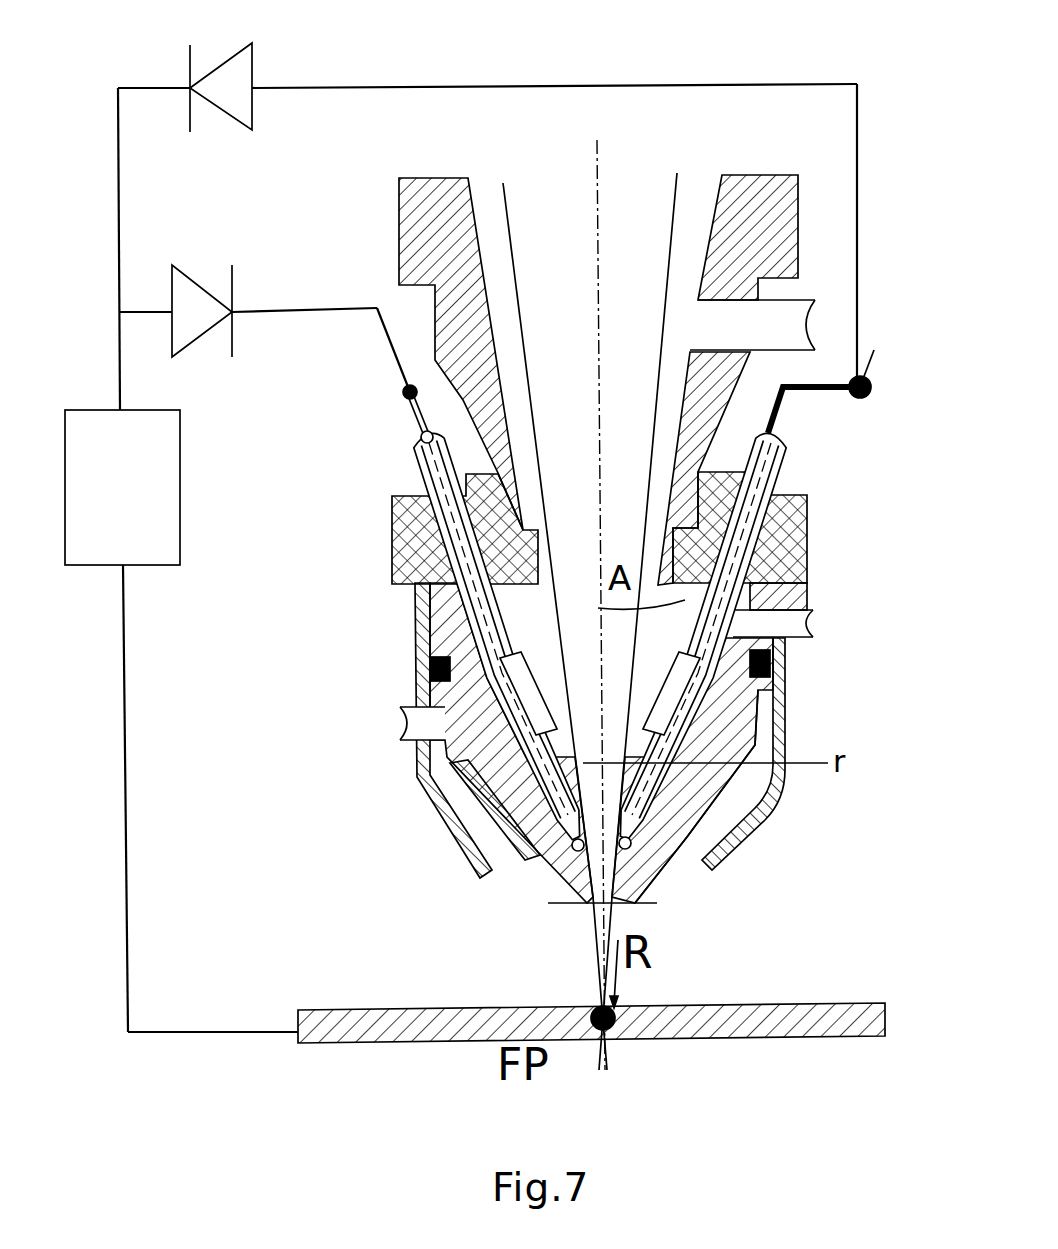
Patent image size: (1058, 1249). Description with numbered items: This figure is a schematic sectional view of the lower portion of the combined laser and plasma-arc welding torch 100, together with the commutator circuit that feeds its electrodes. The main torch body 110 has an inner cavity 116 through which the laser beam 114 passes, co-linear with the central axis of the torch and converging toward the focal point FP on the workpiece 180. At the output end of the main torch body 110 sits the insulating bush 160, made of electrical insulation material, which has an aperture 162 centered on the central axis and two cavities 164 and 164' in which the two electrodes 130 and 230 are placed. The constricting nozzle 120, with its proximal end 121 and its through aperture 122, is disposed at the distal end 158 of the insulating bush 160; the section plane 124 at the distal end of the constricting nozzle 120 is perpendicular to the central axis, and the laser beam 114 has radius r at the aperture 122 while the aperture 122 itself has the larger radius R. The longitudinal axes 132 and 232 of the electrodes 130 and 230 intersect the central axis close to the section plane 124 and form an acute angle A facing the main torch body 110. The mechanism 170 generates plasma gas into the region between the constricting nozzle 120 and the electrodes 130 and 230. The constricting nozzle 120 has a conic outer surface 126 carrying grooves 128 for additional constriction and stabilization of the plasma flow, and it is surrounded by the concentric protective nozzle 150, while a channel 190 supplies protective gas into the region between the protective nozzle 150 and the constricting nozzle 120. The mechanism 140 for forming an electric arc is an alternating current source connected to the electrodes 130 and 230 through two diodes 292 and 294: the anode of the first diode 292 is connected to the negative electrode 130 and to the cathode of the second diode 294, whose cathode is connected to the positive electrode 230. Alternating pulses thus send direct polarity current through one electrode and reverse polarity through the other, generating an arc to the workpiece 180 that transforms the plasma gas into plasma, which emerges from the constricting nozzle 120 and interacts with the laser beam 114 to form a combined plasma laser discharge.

The welding torch 100 is at (440, 348).
The main torch body 110 is at (458, 412).
The laser beam 114 is at (675, 192).
The inner cavity 116 is at (579, 272).
The constricting nozzle 120 is at (632, 830).
The proximal end 121 is at (432, 668).
The through aperture 122 is at (563, 897).
The section plane 124 is at (548, 905).
The conic outer surface 126 is at (785, 735).
The grooves 128 is at (510, 842).
The electrode 130 is at (763, 675).
The longitudinal axis 132 is at (737, 517).
The mechanism for forming an electric arc 140 is at (122, 487).
The protective nozzle 150 is at (773, 792).
The distal end 158 is at (807, 587).
The insulating bush 160 is at (805, 518).
The aperture 162 is at (575, 573).
The cavity 164 is at (847, 569).
The cavity 164' is at (384, 725).
The mechanism for generating plasma gas 170 is at (772, 320).
The workpiece 180 is at (620, 998).
The channel 190 is at (417, 725).
The electrode 230 is at (578, 760).
The longitudinal axis 232 is at (445, 482).
The first diode 292 is at (220, 66).
The second diode 294 is at (207, 285).